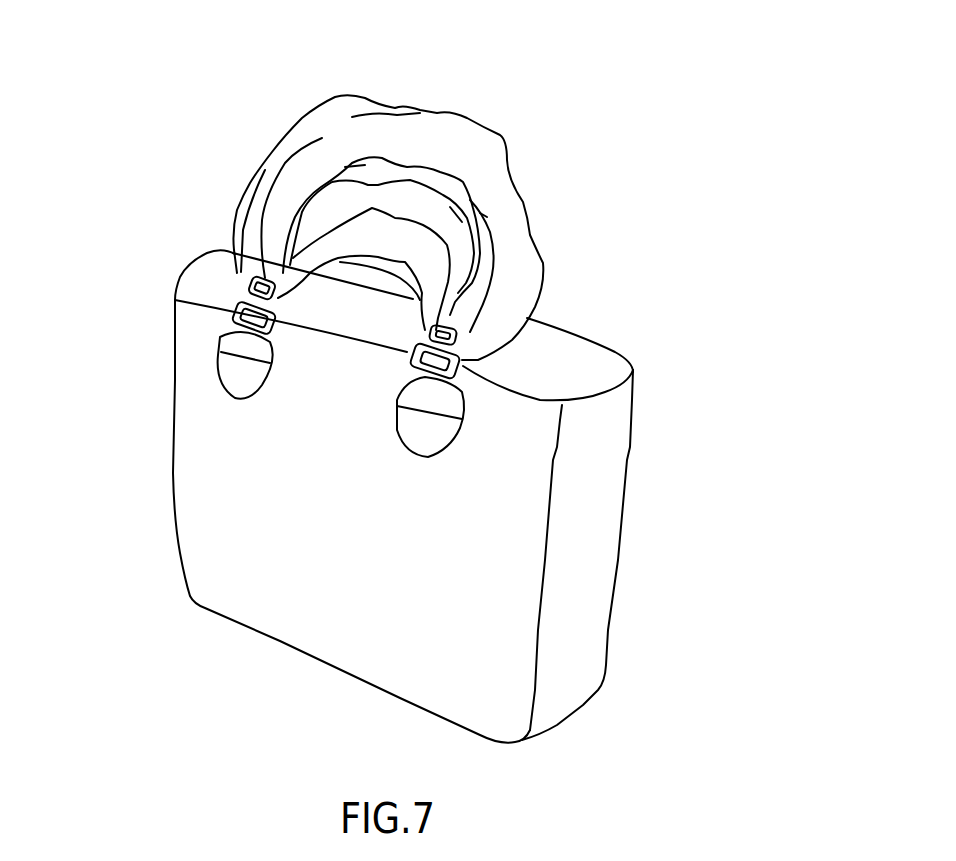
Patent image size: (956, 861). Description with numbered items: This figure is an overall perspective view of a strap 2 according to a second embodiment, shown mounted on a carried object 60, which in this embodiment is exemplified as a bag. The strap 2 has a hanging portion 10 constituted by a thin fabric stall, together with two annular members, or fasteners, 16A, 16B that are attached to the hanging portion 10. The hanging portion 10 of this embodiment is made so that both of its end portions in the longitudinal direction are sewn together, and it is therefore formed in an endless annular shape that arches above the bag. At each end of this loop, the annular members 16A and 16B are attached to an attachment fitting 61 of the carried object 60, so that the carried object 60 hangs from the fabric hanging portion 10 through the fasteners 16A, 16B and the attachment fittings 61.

The strap 2 is at (531, 95).
The hanging portion 10 is at (264, 141).
The annular member (fastener) 16A is at (467, 362).
The annular member (fastener) 16B is at (248, 288).
The carried object 60 is at (620, 557).
The attachment fitting 61 is at (233, 317).